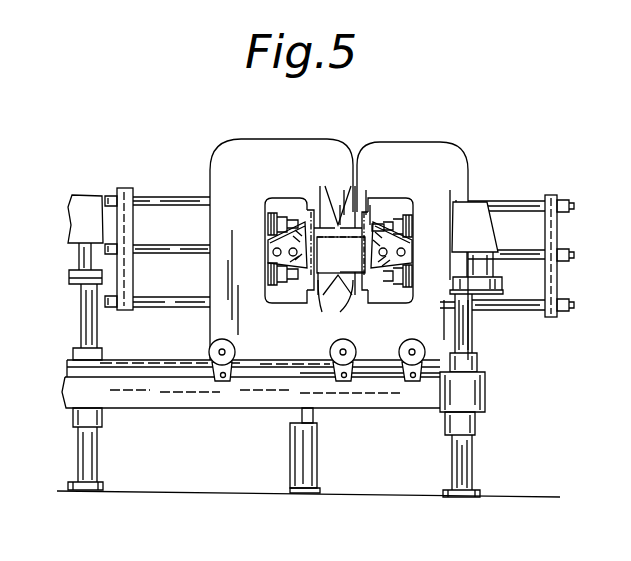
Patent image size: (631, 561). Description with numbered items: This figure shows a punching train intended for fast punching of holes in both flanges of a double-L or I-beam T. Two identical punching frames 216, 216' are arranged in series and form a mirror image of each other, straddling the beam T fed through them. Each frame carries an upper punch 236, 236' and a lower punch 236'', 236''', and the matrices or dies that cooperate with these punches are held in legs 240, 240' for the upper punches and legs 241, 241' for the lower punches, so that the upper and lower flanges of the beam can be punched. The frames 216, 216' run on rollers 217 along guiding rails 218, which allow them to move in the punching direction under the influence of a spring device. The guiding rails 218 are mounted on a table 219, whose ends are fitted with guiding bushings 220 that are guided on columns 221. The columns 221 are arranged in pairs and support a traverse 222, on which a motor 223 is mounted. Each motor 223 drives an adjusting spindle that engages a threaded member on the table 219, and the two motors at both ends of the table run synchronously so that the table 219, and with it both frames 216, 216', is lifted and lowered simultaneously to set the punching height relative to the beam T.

The punching frame 216 is at (255, 232).
The punching frame 216' is at (443, 223).
The upper punch 236 is at (260, 162).
The upper punch 236' is at (425, 163).
The lower punch 236'' is at (416, 281).
The lower punch 236''' is at (272, 286).
The leg 240 is at (331, 182).
The leg 240' is at (385, 160).
The leg 241 is at (317, 314).
The leg 241' is at (375, 314).
The I-beam T is at (313, 200).
The motor 223 is at (480, 227).
The traverse 222 is at (498, 296).
The guiding bushing 220 is at (478, 370).
The column 221 is at (455, 452).
The guiding rail 218 is at (180, 362).
The table 219 is at (205, 400).
The roller 217 is at (236, 366).